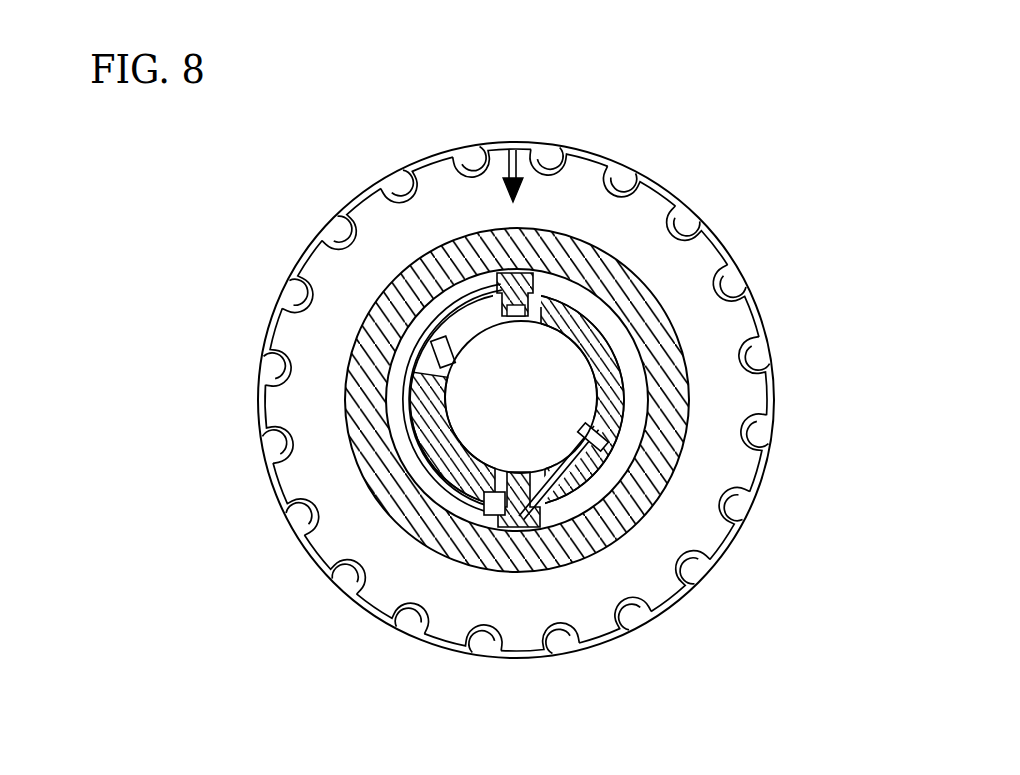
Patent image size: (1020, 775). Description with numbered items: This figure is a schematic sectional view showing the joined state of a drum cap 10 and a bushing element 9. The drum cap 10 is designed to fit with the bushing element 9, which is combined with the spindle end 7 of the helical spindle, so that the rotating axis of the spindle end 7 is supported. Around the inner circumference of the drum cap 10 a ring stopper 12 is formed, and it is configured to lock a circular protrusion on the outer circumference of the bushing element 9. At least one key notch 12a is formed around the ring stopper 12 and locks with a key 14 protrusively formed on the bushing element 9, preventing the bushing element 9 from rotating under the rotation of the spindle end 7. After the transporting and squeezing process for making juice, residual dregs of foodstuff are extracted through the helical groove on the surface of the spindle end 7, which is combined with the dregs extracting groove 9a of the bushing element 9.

The drum cap 10 is at (738, 272).
The ring stopper 12 is at (393, 422).
The key notch 12a is at (500, 502).
The bushing element 9 is at (595, 463).
The dregs extracting groove 9a is at (600, 385).
The spindle end 7 is at (487, 497).
The key 14 is at (547, 527).